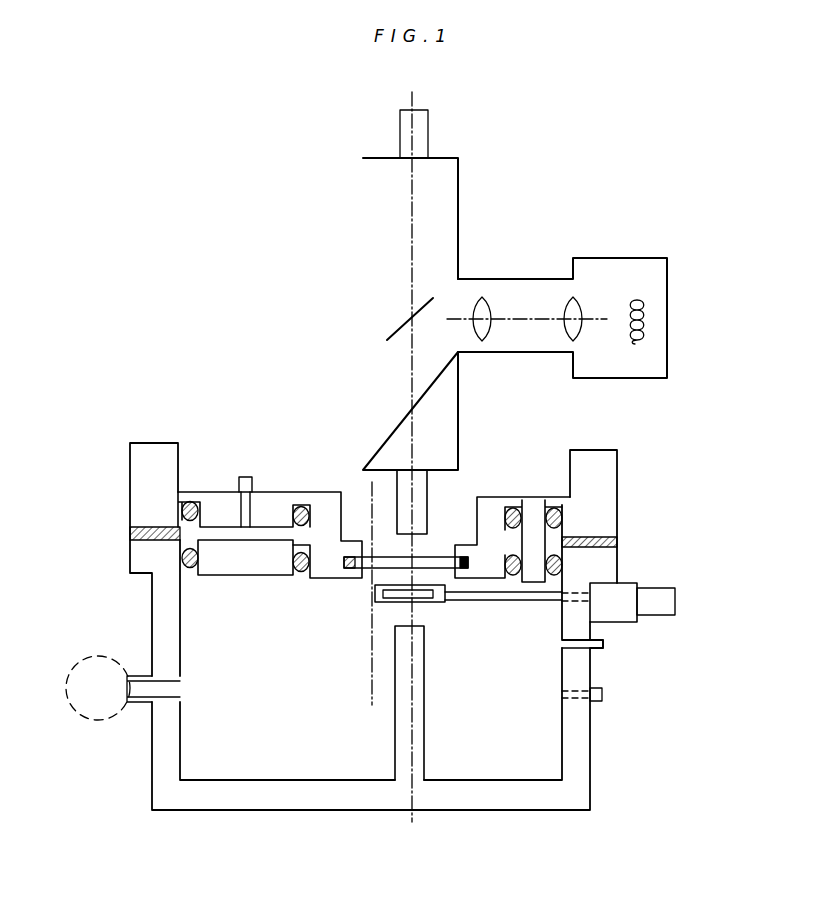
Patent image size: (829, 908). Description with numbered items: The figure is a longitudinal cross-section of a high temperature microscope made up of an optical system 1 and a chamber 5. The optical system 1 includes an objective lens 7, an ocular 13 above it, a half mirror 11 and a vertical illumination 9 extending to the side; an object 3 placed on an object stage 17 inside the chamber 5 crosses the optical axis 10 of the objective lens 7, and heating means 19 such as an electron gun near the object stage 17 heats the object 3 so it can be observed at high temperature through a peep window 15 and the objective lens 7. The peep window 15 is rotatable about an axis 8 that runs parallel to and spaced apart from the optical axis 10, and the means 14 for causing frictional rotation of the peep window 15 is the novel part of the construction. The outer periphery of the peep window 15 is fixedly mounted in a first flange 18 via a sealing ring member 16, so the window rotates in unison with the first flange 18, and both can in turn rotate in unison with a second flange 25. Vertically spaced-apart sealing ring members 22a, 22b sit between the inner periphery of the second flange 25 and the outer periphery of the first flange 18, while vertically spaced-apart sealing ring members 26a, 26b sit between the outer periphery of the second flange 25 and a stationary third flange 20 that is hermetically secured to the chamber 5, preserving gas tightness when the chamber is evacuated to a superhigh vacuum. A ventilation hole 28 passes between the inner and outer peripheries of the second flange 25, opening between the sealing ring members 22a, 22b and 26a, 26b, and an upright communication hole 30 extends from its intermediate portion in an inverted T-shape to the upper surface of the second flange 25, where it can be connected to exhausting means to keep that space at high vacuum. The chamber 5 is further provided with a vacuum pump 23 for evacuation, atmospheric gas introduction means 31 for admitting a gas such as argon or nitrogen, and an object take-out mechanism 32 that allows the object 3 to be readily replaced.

The optical system 1 is at (353, 216).
The object 3 is at (423, 607).
The chamber 5 is at (150, 794).
The objective lens 7 is at (424, 506).
The axis 8 is at (371, 690).
The vertical illumination 9 is at (537, 292).
The optical axis 10 is at (414, 228).
The half mirror 11 is at (395, 330).
The ocular 13 is at (430, 110).
The means for causing frictional rotation 14 is at (303, 460).
The peep window 15 is at (430, 557).
The sealing ring member 16 is at (350, 570).
The object stage 17 is at (441, 607).
The first flange 18 is at (485, 495).
The heating means 19 is at (393, 768).
The third flange 20 is at (137, 506).
The sealing ring member 22a is at (313, 492).
The sealing ring member 22b is at (300, 577).
The vacuum pump 23 is at (92, 722).
The second flange 25 is at (215, 490).
The sealing ring member 26a is at (190, 497).
The sealing ring member 26b is at (186, 566).
The ventilation hole 28 is at (258, 542).
The communication hole 30 is at (249, 476).
The atmospheric gas introduction means 31 is at (604, 645).
The object take-out mechanism 32 is at (670, 603).